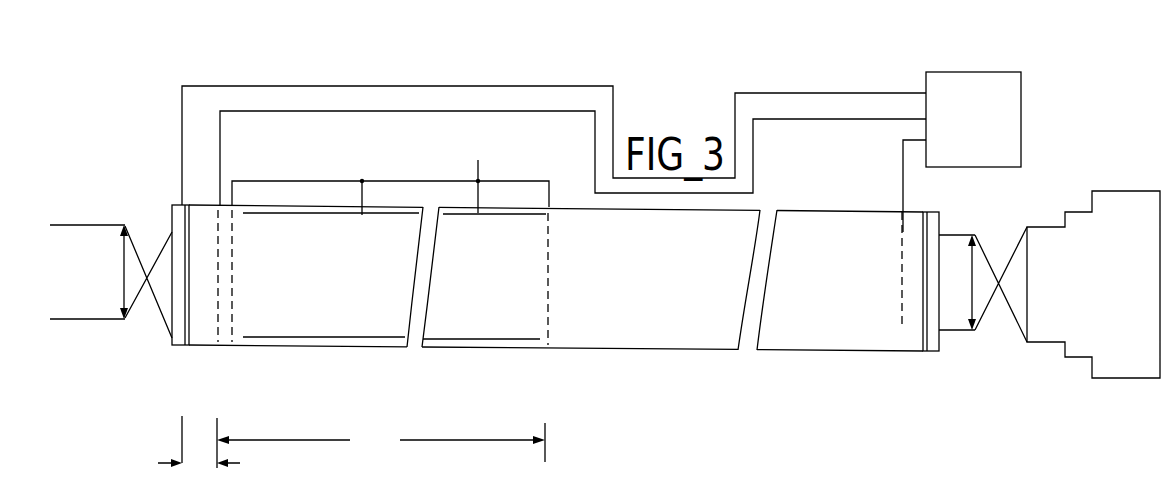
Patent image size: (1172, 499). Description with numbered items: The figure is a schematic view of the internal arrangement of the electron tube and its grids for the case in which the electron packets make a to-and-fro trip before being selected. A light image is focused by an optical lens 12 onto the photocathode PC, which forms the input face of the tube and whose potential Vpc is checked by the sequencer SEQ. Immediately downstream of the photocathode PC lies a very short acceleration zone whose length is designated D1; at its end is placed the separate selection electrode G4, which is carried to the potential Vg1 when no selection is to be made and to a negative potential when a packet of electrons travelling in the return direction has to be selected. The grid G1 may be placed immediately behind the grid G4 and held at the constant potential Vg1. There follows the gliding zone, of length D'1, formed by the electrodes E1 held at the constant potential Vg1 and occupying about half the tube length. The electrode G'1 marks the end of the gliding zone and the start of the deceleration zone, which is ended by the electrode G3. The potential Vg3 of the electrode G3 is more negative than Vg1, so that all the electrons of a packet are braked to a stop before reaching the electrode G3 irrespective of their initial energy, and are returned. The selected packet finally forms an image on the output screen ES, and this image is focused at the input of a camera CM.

The optical lens 12 is at (121, 292).
The photocathode PC is at (178, 333).
The photocathode potential Vpc is at (536, 145).
The selection electrode G4 is at (218, 312).
The grid G1 is at (232, 285).
The gliding zone potential Vg1 is at (390, 187).
The electrodes of the gliding zone E1 is at (310, 215).
The electrode G'1 is at (533, 300).
The electrode G3 is at (902, 338).
The deceleration electrode potential Vg3 is at (893, 186).
The output screen ES is at (930, 340).
The camera CM is at (1093, 284).
The sequencer SEQ is at (973, 119).
The acceleration zone length D1 is at (199, 445).
The gliding zone length D'1 is at (381, 442).